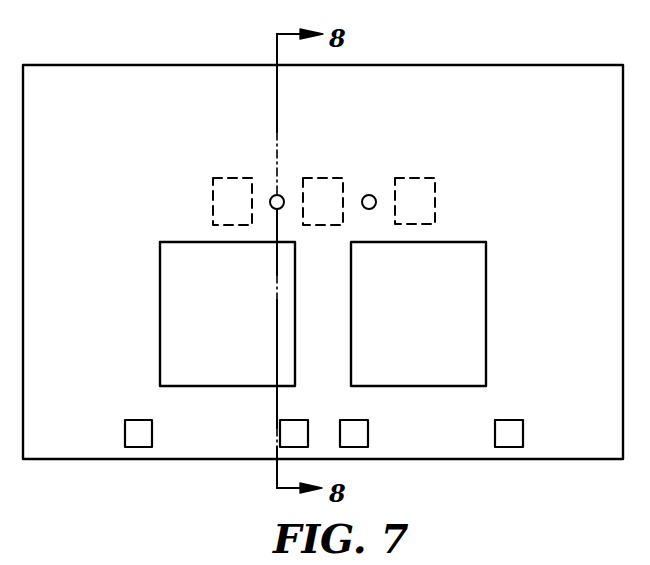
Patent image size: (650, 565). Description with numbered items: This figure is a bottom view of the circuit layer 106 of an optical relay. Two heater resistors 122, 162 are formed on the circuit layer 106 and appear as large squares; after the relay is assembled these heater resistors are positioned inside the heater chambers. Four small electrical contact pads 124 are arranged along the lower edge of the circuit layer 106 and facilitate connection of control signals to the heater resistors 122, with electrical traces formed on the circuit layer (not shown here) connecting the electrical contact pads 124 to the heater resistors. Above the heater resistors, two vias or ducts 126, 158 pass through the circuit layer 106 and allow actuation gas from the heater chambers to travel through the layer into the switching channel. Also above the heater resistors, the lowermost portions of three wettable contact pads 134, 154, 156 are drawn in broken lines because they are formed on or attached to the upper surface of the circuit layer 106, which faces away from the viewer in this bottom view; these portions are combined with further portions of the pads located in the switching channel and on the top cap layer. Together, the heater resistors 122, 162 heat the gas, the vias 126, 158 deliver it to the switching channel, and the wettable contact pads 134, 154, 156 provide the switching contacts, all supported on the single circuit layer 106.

The circuit layer 106 is at (97, 65).
The heater resistor 122 is at (465, 242).
The electrical contact pads 124 is at (143, 420).
The via 126 is at (371, 195).
The wettable contact pad 134 is at (412, 178).
The wettable contact pad 154 is at (323, 178).
The wettable contact pad 156 is at (228, 178).
The via 158 is at (275, 195).
The heater resistor 162 is at (175, 242).